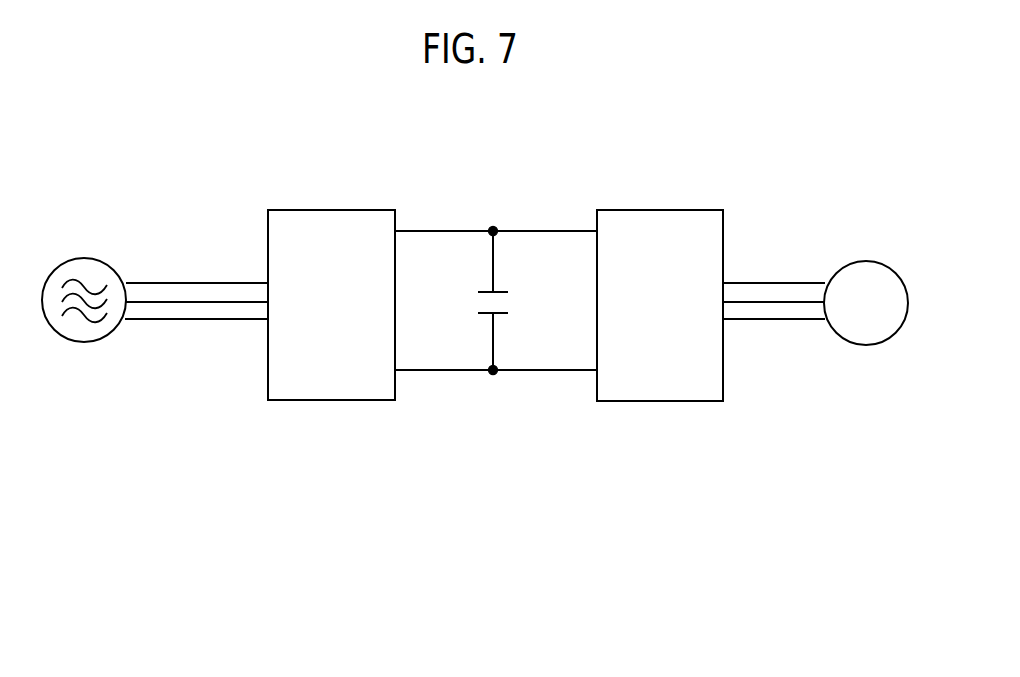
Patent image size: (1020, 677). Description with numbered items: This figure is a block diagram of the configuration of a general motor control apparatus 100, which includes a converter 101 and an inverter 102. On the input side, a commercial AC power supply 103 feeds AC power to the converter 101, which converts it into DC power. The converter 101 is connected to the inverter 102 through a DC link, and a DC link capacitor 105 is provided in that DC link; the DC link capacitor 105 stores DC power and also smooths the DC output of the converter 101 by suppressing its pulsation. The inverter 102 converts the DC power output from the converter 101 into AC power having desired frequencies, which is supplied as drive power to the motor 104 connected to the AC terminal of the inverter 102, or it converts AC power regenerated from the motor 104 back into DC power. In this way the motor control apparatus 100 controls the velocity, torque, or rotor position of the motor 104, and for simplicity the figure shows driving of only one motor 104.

The motor control apparatus 100 is at (490, 511).
The converter 101 is at (347, 210).
The inverter 102 is at (627, 210).
The AC power supply 103 is at (80, 257).
The motor 104 is at (862, 261).
The DC link capacitor 105 is at (479, 286).